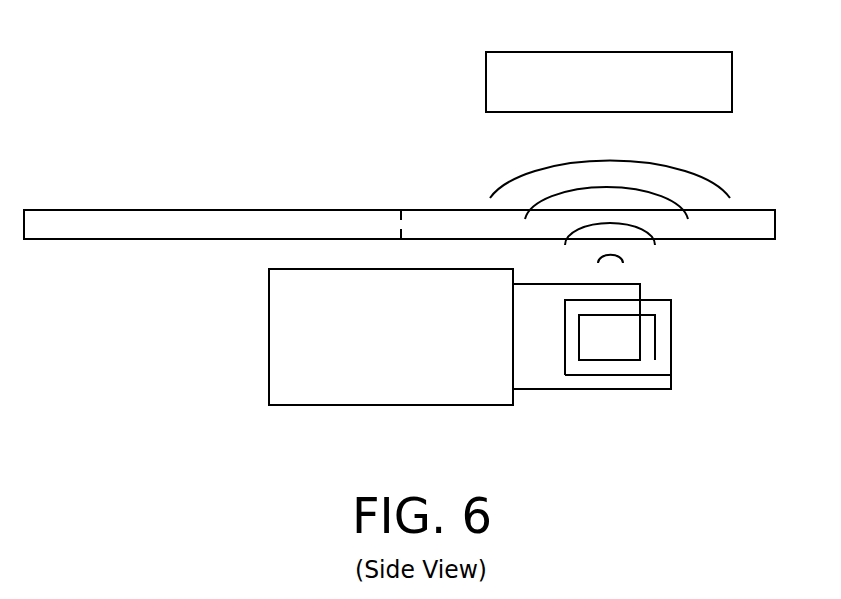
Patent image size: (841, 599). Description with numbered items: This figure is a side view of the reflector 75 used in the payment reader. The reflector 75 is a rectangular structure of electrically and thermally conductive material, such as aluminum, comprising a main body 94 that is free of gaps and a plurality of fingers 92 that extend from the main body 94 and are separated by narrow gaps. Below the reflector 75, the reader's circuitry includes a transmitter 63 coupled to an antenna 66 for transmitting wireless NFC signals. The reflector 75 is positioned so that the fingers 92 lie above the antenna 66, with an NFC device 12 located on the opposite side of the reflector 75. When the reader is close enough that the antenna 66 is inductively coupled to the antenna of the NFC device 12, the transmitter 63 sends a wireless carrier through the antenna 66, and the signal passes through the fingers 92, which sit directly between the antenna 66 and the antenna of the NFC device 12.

The NFC device 12 is at (683, 52).
The reflector 75 is at (343, 194).
The main body 94 is at (152, 210).
The fingers 92 is at (752, 210).
The transmitter 63 is at (269, 315).
The antenna 66 is at (671, 343).